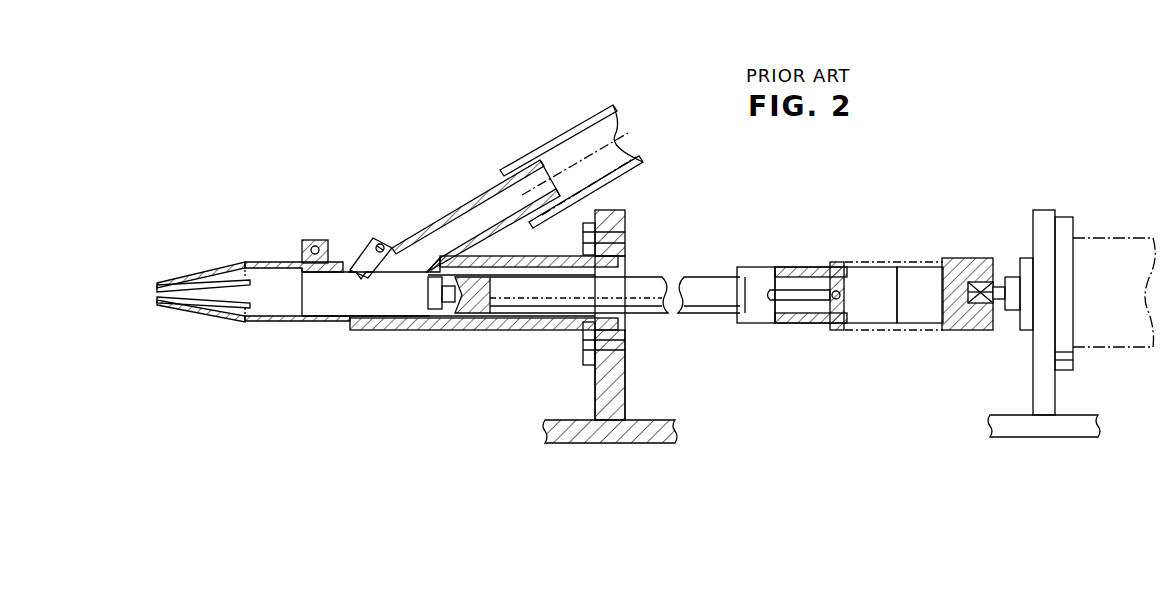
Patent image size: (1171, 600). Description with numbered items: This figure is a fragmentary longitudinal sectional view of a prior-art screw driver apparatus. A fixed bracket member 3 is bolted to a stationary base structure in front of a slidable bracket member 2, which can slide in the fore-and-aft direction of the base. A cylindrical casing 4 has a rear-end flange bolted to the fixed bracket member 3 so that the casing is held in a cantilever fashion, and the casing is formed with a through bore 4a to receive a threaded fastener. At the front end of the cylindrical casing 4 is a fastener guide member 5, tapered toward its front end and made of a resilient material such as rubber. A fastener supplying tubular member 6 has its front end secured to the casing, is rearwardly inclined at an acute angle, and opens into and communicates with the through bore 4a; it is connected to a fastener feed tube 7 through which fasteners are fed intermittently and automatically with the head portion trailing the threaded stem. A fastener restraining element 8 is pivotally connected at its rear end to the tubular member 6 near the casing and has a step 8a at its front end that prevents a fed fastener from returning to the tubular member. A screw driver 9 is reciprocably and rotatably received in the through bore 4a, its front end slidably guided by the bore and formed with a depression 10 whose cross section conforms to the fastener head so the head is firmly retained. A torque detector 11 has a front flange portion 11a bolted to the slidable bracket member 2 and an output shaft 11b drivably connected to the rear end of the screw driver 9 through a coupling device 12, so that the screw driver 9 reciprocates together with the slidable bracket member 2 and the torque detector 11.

The slidable bracket member 2 is at (1028, 437).
The fixed bracket member 3 is at (603, 443).
The cylindrical casing 4 is at (430, 353).
The through bore 4a is at (385, 320).
The fastener guide member 5 is at (247, 330).
The fastener supplying tubular member 6 is at (448, 217).
The fastener feed tube 7 is at (572, 128).
The fastener restraining element 8 is at (379, 226).
The step 8a is at (366, 278).
The screw driver 9 is at (709, 267).
The depression 10 is at (428, 290).
The torque detector 11 is at (1135, 230).
The front flange portion 11a is at (1065, 217).
The output shaft 11b is at (1015, 251).
The coupling device 12 is at (878, 268).